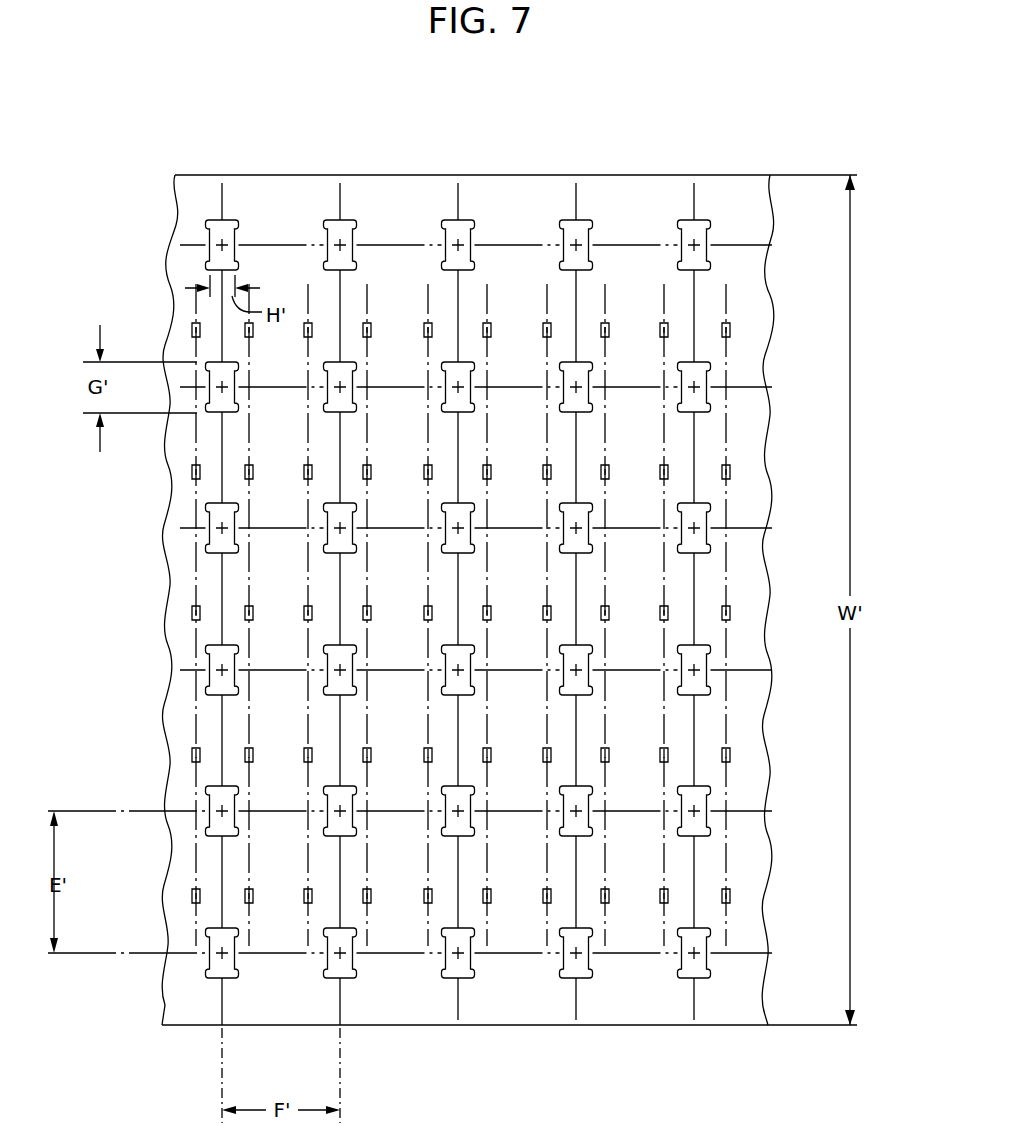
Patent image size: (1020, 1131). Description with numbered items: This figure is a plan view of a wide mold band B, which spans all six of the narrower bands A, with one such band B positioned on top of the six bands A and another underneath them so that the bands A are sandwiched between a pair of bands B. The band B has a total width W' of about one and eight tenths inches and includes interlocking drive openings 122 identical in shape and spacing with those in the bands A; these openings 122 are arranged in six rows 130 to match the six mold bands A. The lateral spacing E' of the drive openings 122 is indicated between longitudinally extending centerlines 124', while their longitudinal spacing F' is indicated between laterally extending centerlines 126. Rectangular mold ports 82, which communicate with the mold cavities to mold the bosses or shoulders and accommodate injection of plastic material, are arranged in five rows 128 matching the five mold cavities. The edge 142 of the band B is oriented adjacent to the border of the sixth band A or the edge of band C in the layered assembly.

The edge 142 is at (356, 175).
The mold band B is at (812, 152).
The rows of interlocking drive openings 130 is at (782, 244).
The rows of mold ports 128 is at (746, 332).
The mold ports 82 is at (610, 330).
The interlocking drive openings 122 is at (562, 240).
The laterally extending centerlines 126 is at (220, 1036).
The longitudinally extending centerlines 124' is at (123, 876).